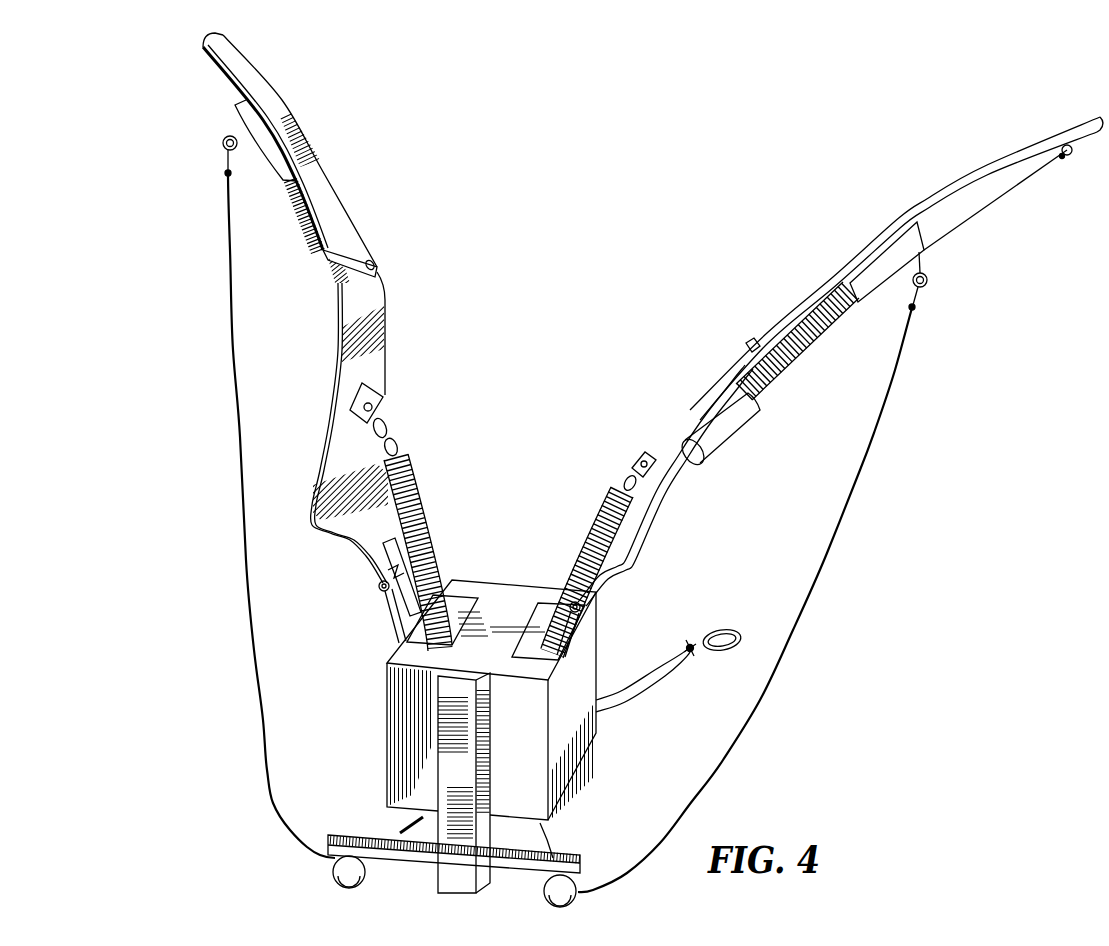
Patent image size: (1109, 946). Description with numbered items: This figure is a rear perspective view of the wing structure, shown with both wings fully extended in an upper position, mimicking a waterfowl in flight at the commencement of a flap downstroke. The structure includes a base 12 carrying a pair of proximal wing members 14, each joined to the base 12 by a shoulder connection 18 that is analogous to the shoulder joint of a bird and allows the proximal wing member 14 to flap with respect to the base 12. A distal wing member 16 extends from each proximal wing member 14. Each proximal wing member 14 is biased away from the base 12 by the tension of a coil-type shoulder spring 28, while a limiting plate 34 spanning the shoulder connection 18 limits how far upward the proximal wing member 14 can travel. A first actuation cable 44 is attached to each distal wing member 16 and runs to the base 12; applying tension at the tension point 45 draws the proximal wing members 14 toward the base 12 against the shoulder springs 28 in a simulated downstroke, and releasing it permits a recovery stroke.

The base 12 is at (582, 742).
The proximal wing member 14 is at (375, 367).
The distal wing member 16 is at (324, 188).
The shoulder connection 18 is at (366, 594).
The shoulder spring 28 is at (427, 490).
The limiting plate 34 is at (380, 537).
The first actuation cable 44 is at (247, 622).
The tension point 45 is at (723, 628).